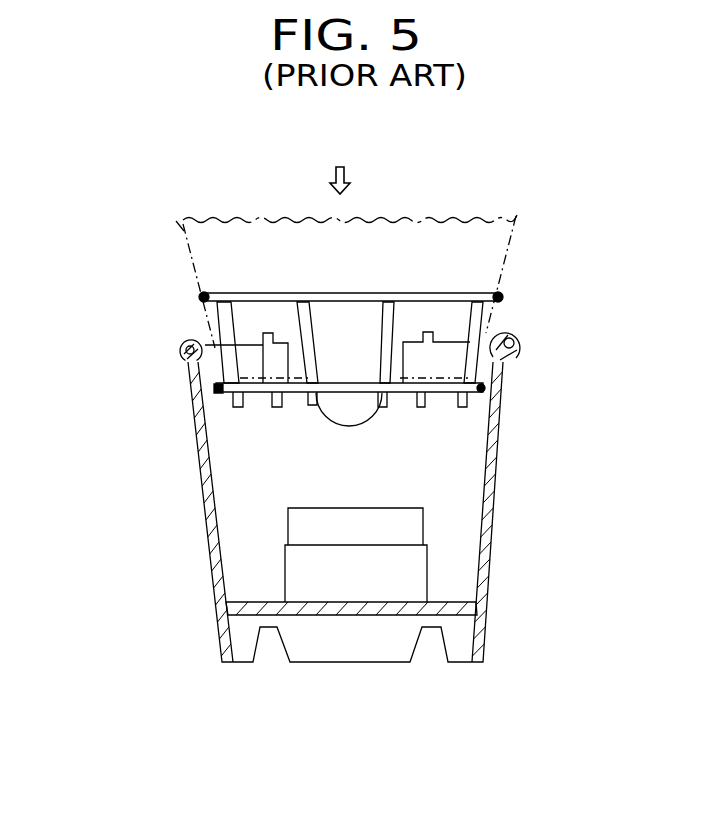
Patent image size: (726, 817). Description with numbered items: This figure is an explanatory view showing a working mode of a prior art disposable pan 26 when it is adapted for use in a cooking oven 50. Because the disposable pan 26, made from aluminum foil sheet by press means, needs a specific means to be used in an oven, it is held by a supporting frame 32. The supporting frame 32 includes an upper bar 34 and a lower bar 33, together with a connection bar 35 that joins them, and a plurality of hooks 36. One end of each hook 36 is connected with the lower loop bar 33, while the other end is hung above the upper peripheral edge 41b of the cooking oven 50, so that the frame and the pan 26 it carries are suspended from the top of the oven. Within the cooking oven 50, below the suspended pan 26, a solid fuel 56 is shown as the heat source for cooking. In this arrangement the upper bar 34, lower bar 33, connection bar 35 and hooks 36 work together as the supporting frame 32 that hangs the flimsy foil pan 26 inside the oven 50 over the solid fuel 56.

The disposable pan 26 is at (178, 225).
The supporting frame 32 is at (205, 295).
The lower bar 33 is at (215, 398).
The upper bar 34 is at (470, 296).
The connection bar 35 is at (473, 323).
The hook 36 is at (205, 345).
The upper peripheral edge 41b is at (178, 366).
The cooking oven 50 is at (500, 482).
The solid fuel 56 is at (293, 520).